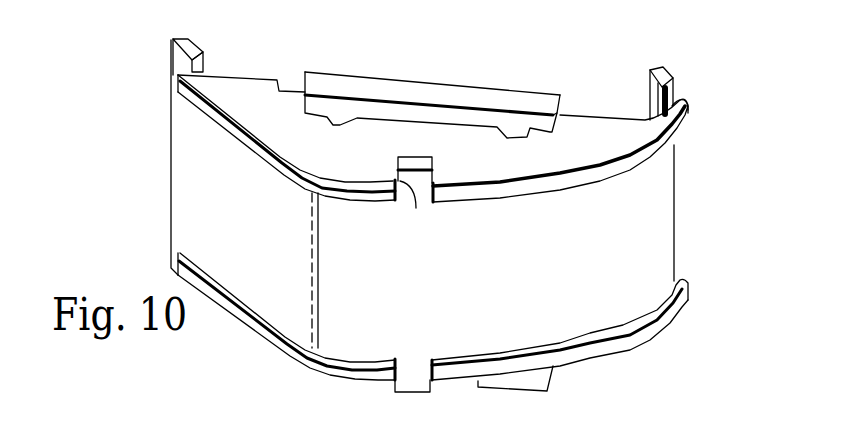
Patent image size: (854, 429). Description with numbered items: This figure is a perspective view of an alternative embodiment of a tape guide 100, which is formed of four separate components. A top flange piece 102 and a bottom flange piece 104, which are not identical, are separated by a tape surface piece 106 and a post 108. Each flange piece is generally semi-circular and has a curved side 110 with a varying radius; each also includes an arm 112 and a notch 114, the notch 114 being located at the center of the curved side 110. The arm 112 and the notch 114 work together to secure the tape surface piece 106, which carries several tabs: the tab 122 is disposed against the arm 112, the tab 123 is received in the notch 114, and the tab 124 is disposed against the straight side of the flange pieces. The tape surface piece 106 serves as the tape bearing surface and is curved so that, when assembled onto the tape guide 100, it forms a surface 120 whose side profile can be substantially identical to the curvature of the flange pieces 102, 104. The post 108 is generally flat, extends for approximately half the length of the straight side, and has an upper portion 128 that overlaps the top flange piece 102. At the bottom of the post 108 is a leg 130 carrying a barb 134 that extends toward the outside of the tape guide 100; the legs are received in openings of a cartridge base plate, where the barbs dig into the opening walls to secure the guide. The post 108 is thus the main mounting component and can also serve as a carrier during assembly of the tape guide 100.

The tape guide 100 is at (530, 72).
The top flange piece 102 is at (288, 112).
The bottom flange piece 104 is at (650, 338).
The tape surface piece 106 is at (498, 284).
The post 108 is at (401, 86).
The curved side 110 is at (652, 157).
The arm 112 is at (674, 113).
The notch 114 is at (417, 209).
The surface 120 is at (660, 231).
The tab 122 is at (661, 67).
The tab 123 is at (422, 160).
The tab 124 is at (193, 43).
The upper portion 128 is at (471, 96).
The leg 130 is at (512, 381).
The barb 134 is at (550, 380).